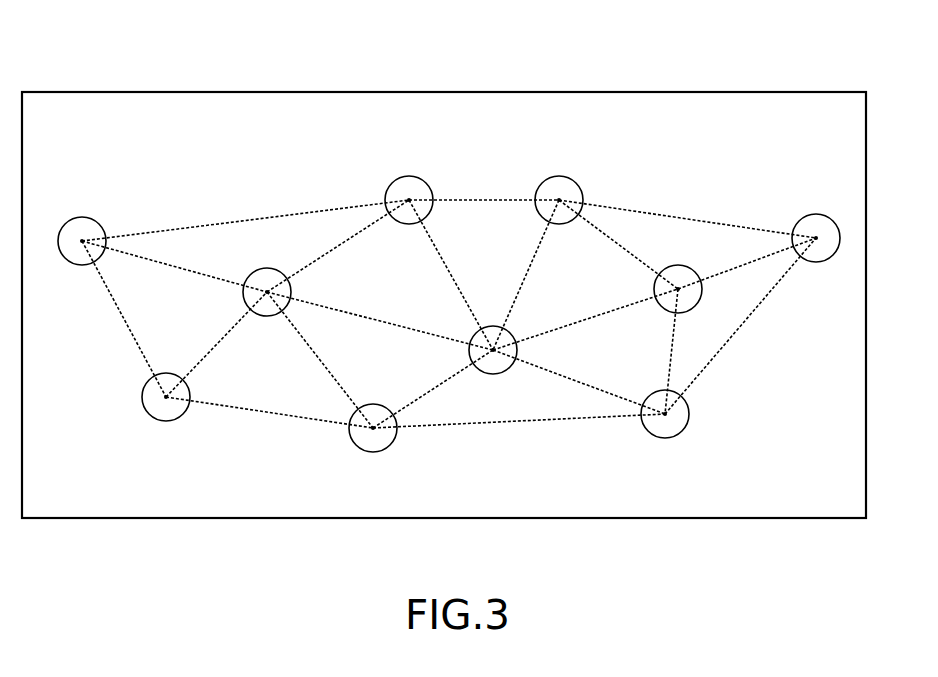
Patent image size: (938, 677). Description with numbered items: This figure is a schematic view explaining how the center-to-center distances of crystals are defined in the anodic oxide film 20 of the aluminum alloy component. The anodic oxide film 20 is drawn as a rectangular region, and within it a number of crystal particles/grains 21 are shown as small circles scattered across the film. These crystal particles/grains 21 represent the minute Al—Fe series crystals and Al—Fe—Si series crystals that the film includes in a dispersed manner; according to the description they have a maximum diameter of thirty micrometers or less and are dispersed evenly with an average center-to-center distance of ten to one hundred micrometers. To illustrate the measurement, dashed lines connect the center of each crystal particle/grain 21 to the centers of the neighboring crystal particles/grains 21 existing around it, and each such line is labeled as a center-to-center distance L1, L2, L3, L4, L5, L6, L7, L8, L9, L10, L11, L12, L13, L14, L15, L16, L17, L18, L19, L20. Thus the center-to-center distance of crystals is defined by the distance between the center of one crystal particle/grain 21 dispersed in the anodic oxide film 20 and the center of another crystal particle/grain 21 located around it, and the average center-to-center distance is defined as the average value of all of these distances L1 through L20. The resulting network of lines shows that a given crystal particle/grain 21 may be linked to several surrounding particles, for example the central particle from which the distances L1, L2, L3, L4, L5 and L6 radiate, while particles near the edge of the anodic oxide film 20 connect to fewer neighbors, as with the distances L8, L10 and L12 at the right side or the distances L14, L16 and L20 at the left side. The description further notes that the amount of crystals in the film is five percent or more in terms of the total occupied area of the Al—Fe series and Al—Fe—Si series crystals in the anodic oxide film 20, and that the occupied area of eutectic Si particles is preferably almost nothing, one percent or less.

The anodic oxide film 20 is at (292, 122).
The crystal particles/grains 21 is at (82, 241).
The center-to-center distance L1 is at (579, 380).
The center-to-center distance L2 is at (585, 315).
The center-to-center distance L3 is at (526, 275).
The center-to-center distance L4 is at (451, 275).
The center-to-center distance L5 is at (380, 321).
The center-to-center distance L6 is at (433, 389).
The center-to-center distance L7 is at (519, 437).
The center-to-center distance L8 is at (740, 326).
The center-to-center distance L9 is at (687, 351).
The center-to-center distance L10 is at (747, 258).
The center-to-center distance L11 is at (618, 244).
The center-to-center distance L12 is at (687, 208).
The center-to-center distance L13 is at (484, 180).
The center-to-center distance L14 is at (245, 211).
The center-to-center distance L15 is at (338, 246).
The center-to-center distance L16 is at (174, 271).
The center-to-center distance L17 is at (216, 344).
The center-to-center distance L18 is at (320, 360).
The center-to-center distance L19 is at (269, 420).
The center-to-center distance L20 is at (124, 319).